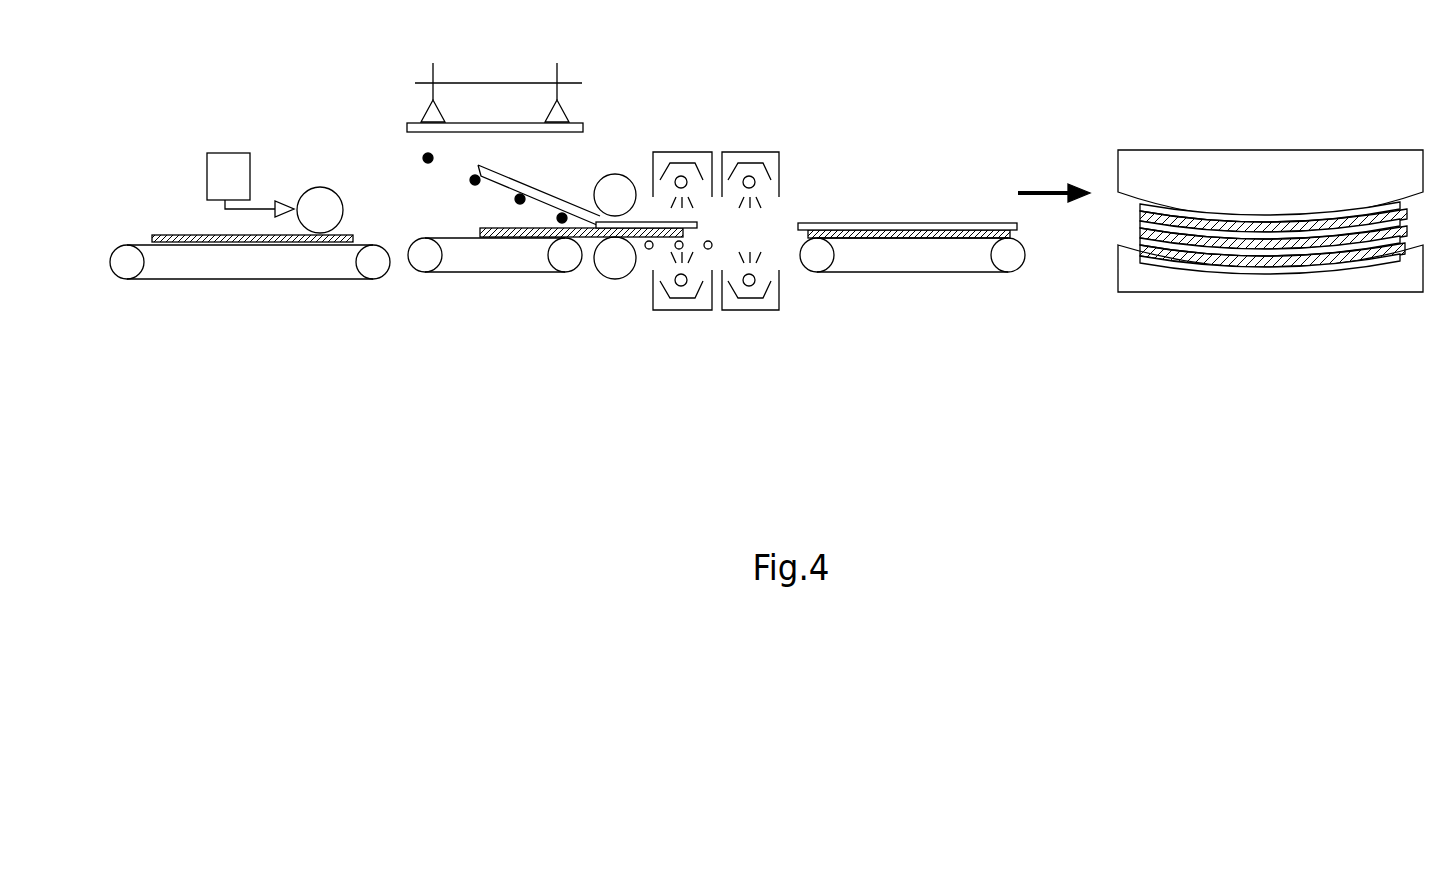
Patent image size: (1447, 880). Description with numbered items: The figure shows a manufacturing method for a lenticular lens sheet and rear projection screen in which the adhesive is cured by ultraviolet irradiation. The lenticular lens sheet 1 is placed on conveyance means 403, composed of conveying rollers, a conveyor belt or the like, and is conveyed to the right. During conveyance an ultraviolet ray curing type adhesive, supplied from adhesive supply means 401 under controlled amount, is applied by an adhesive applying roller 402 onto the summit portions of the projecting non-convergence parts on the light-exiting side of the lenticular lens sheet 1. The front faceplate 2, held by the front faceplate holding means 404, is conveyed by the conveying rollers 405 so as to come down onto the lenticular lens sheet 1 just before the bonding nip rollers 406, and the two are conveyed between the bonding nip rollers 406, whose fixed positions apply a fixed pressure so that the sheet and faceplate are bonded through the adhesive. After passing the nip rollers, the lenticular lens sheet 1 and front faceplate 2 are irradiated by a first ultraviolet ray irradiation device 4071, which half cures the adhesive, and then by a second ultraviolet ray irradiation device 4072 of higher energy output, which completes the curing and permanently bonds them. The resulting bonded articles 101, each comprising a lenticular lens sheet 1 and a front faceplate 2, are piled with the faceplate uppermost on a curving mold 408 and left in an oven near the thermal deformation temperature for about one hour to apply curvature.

The lenticular lens sheet 1 is at (256, 243).
The front faceplate 2 is at (552, 197).
The bonded article 101 is at (1133, 210).
The adhesive supply means 401 is at (207, 163).
The adhesive applying roller 402 is at (316, 186).
The conveyance means 403 is at (312, 280).
The front faceplate holding means 404 is at (478, 83).
The conveying rollers 405 is at (423, 156).
The bonding nip rollers 406 is at (603, 206).
The ultraviolet ray irradiation device 4071 is at (692, 148).
The ultraviolet ray irradiation device 4072 is at (770, 148).
The curving mold 408 is at (1232, 278).